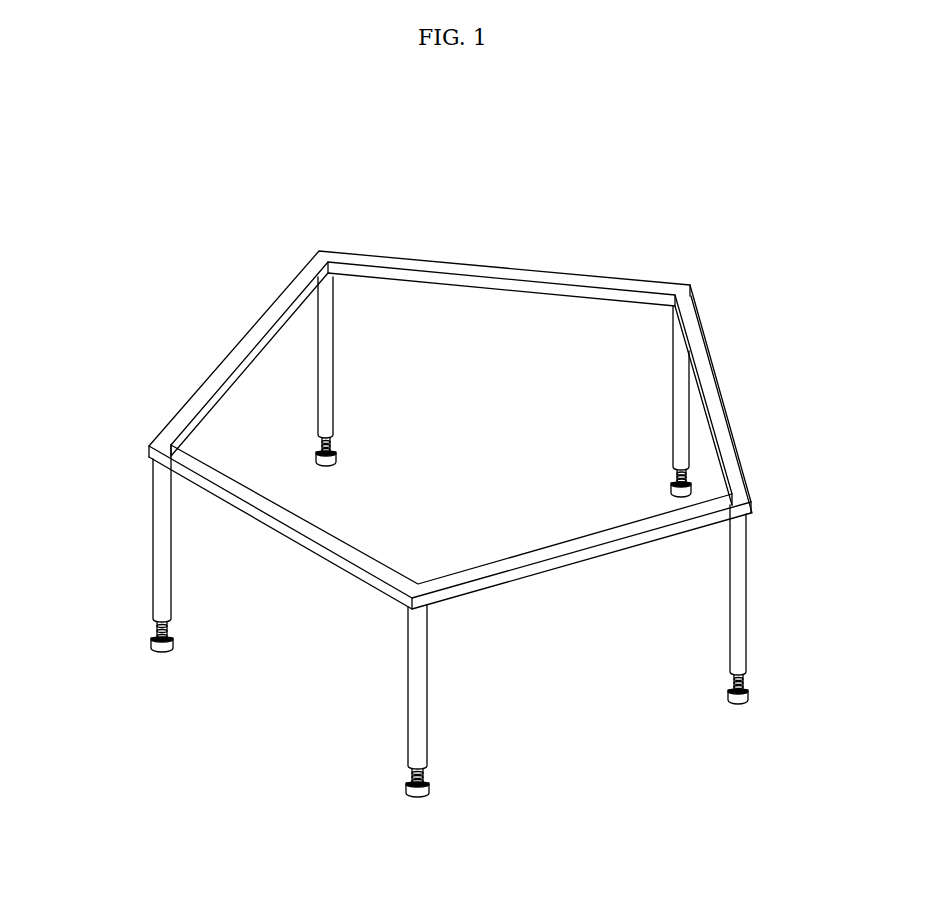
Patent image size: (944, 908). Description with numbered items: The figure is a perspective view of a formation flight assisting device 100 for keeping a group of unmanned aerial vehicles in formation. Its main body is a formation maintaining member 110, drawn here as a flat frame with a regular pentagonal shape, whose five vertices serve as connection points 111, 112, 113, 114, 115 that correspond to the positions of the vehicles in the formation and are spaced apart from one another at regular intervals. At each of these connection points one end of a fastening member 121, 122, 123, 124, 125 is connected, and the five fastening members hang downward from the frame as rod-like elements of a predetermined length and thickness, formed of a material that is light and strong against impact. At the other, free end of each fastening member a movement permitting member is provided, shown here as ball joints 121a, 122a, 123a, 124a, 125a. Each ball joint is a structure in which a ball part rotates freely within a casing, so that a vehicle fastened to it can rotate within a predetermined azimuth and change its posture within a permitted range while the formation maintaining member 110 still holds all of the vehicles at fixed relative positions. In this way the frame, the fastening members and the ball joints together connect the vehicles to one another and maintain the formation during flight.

The formation flight assisting device 100 is at (676, 184).
The formation maintaining member 110 is at (500, 265).
The connection point 111 is at (149, 445).
The connection point 112 is at (318, 249).
The connection point 113 is at (691, 284).
The connection point 114 is at (752, 502).
The connection point 115 is at (411, 601).
The fastening member 121 is at (153, 533).
The fastening member 122 is at (334, 310).
The fastening member 123 is at (673, 352).
The fastening member 124 is at (748, 543).
The fastening member 125 is at (408, 688).
The ball joint 121a is at (151, 645).
The ball joint 122a is at (337, 462).
The ball joint 123a is at (671, 488).
The ball joint 124a is at (748, 694).
The ball joint 125a is at (406, 793).